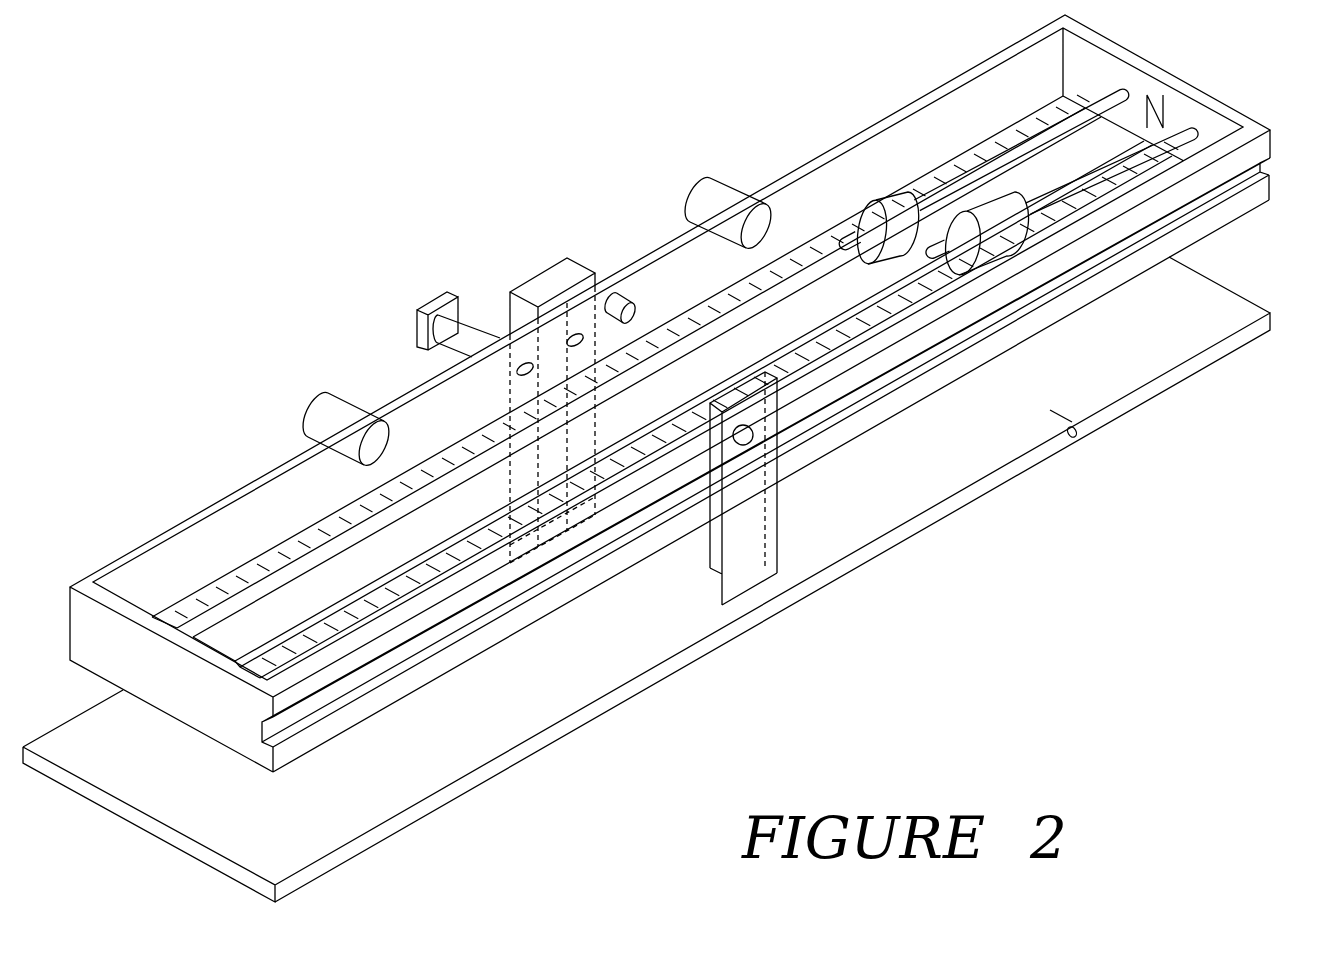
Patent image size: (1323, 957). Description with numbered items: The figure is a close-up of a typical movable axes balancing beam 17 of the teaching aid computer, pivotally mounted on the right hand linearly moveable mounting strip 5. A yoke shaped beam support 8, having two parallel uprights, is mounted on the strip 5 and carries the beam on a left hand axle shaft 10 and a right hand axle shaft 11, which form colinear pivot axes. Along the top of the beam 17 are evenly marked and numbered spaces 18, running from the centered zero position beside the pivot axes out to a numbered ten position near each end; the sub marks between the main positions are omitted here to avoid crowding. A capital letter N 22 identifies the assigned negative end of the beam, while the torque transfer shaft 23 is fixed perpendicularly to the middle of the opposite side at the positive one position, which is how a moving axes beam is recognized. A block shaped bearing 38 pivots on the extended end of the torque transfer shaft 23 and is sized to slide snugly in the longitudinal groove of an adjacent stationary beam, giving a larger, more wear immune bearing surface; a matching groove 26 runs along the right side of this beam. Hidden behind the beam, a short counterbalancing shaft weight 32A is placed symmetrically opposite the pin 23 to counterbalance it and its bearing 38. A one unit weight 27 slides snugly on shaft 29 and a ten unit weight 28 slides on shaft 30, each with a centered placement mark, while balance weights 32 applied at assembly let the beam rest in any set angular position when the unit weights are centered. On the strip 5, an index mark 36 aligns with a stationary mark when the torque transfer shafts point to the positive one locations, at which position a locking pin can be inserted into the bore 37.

The right hand linearly moveable mounting strip 5 is at (963, 474).
The yoke shaped beam support 8 is at (710, 568).
The left hand axle shaft 10 is at (557, 323).
The right hand axle shaft 11 is at (753, 440).
The movable axes balancing beam 17 is at (1163, 250).
The evenly marked and numbered spaces 18 is at (1070, 165).
The capital letter N 22 is at (1167, 110).
The torque transfer shaft 23 is at (465, 337).
The groove 26 is at (393, 670).
The one unit weight 27 is at (885, 202).
The ten unit weight 28 is at (990, 262).
The shaft for one unit weight 29 is at (880, 200).
The shaft for ten unit weight 30 is at (1197, 133).
The balance weights 32 is at (713, 198).
The counterbalancing shaft weight 32A is at (613, 303).
The index mark on movable strip 36 is at (1052, 412).
The bore 37 is at (1067, 440).
The block shaped bearing 38 is at (447, 295).